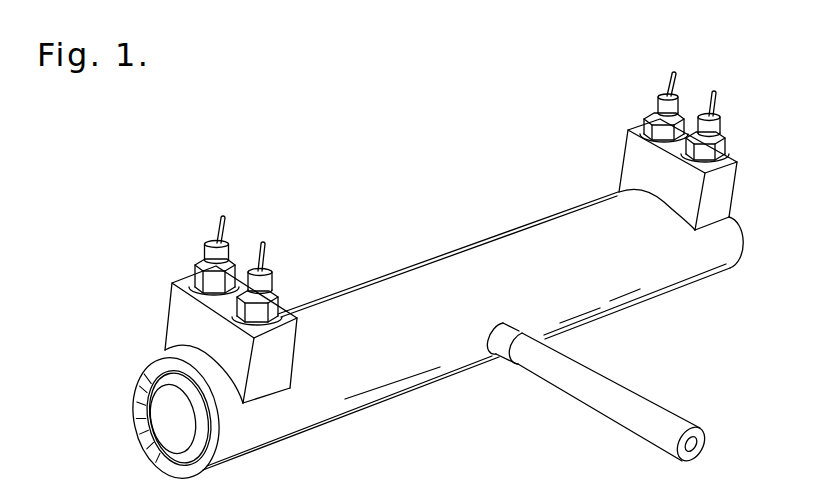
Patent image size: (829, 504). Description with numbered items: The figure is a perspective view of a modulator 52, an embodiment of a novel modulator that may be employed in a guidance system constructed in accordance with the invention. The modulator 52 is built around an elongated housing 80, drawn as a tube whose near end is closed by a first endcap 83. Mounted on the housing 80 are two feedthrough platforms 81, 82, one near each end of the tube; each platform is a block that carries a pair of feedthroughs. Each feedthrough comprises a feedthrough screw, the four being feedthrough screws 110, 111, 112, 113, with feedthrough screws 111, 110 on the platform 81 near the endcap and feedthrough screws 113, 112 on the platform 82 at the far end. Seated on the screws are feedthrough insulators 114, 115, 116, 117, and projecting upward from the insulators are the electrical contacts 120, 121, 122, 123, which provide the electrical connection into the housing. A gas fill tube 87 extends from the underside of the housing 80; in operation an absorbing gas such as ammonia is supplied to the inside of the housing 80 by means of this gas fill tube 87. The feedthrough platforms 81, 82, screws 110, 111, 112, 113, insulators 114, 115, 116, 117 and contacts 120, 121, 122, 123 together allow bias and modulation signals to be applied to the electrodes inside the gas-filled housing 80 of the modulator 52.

The modulator 52 is at (387, 125).
The housing 80 is at (678, 268).
The feedthrough platform 81 is at (175, 305).
The feedthrough platform 82 is at (737, 200).
The first endcap 83 is at (168, 423).
The gas fill tube 87 is at (665, 413).
The feedthrough screw 110 is at (275, 305).
The feedthrough screw 111 is at (197, 278).
The feedthrough screw 112 is at (725, 145).
The feedthrough screw 113 is at (645, 122).
The feedthrough insulator 114 is at (271, 280).
The feedthrough insulator 115 is at (208, 247).
The feedthrough insulator 116 is at (718, 130).
The feedthrough insulator 117 is at (660, 100).
The electrical contact 120 is at (264, 252).
The electrical contact 121 is at (222, 225).
The electrical contact 122 is at (717, 103).
The electrical contact 123 is at (677, 78).